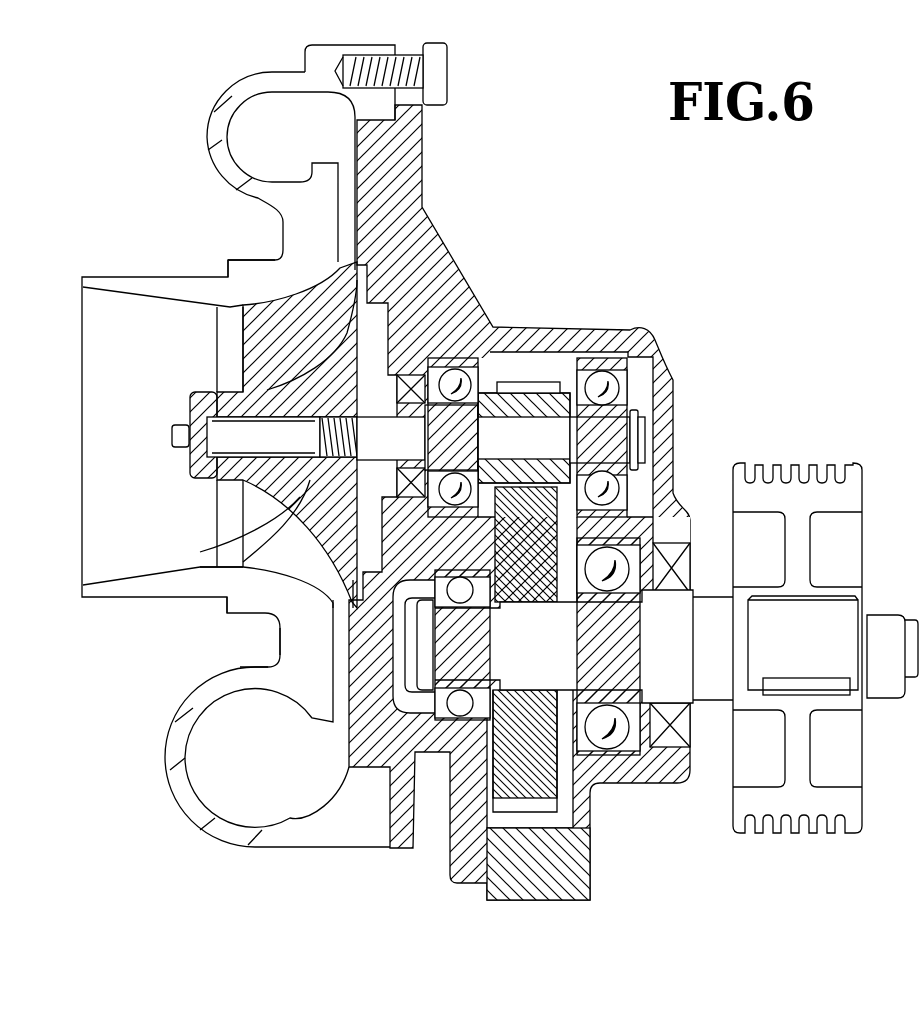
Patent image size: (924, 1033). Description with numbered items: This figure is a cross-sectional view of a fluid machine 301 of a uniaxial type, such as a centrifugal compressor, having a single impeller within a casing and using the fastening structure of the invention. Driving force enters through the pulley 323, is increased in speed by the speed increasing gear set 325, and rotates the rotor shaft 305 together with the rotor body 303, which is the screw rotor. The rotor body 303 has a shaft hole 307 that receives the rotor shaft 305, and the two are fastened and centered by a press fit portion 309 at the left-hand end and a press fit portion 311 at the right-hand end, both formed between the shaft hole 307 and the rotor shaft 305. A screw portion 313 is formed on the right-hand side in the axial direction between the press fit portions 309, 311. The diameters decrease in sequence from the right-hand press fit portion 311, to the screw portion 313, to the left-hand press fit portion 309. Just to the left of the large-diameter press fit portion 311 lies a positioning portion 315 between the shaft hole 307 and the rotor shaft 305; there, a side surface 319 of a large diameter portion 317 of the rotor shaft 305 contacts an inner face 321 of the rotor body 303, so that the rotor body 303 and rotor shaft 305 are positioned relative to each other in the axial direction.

The fluid machine 301 is at (130, 168).
The rotor body 303 is at (247, 411).
The rotor shaft 305 is at (503, 452).
The shaft hole 307 is at (203, 480).
The press fit portion 309 is at (200, 418).
The press fit portion 311 is at (497, 471).
The screw portion 313 is at (355, 473).
The positioning portion 315 is at (352, 392).
The large diameter portion 317 is at (298, 612).
The side surface 319 is at (245, 614).
The inner face 321 is at (462, 330).
The pulley 323 is at (772, 463).
The speed increasing gear set 325 is at (622, 354).